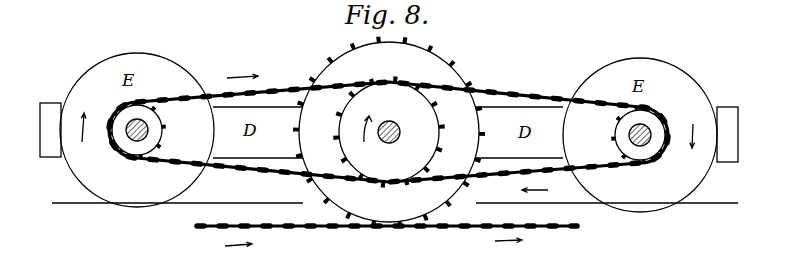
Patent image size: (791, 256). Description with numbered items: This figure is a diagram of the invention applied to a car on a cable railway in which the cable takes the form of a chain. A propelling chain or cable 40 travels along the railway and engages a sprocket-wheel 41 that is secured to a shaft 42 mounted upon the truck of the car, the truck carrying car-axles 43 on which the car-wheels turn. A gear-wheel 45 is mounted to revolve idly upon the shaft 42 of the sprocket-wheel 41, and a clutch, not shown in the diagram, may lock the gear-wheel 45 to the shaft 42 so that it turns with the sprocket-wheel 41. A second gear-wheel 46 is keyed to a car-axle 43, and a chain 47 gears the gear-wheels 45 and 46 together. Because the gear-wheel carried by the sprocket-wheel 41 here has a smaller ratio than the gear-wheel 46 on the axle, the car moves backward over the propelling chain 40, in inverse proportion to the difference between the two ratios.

The propelling chain or cable 40 is at (303, 229).
The sprocket-wheel 41 is at (389, 132).
The shaft 42 is at (389, 123).
The car-axle 43 is at (640, 121).
The gear-wheel 45 is at (389, 132).
The second gear-wheel 46 is at (622, 139).
The chain 47 is at (528, 95).